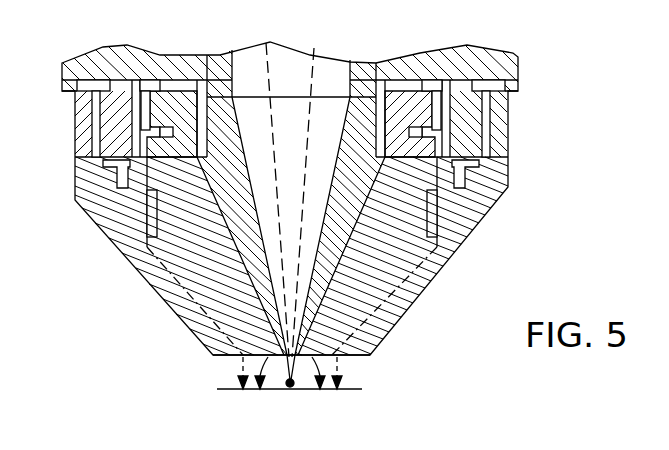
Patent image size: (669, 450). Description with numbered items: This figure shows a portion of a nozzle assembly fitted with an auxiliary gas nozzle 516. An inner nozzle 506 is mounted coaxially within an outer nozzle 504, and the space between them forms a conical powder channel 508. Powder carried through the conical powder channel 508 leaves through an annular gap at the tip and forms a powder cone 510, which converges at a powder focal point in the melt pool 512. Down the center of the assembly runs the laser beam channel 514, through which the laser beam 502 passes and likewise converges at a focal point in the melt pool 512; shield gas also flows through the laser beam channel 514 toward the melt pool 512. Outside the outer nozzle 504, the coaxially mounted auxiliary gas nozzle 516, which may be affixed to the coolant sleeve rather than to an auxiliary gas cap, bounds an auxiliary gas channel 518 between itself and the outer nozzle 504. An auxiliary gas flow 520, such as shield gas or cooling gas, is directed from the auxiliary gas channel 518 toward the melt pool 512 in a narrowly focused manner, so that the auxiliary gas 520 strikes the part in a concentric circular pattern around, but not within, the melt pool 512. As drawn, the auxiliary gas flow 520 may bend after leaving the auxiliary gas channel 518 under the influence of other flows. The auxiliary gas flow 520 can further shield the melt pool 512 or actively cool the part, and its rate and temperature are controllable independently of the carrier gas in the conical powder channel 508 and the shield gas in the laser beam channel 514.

The laser beam 502 is at (312, 63).
The outer nozzle 504 is at (182, 265).
The inner nozzle 506 is at (258, 297).
The conical powder channel 508 is at (262, 342).
The powder cone 510 is at (297, 370).
The melt pool 512 is at (289, 388).
The laser beam channel 514 is at (252, 67).
The auxiliary gas nozzle 516 is at (107, 213).
The auxiliary gas channel 518 is at (370, 330).
The auxiliary gas flow 520 is at (338, 360).